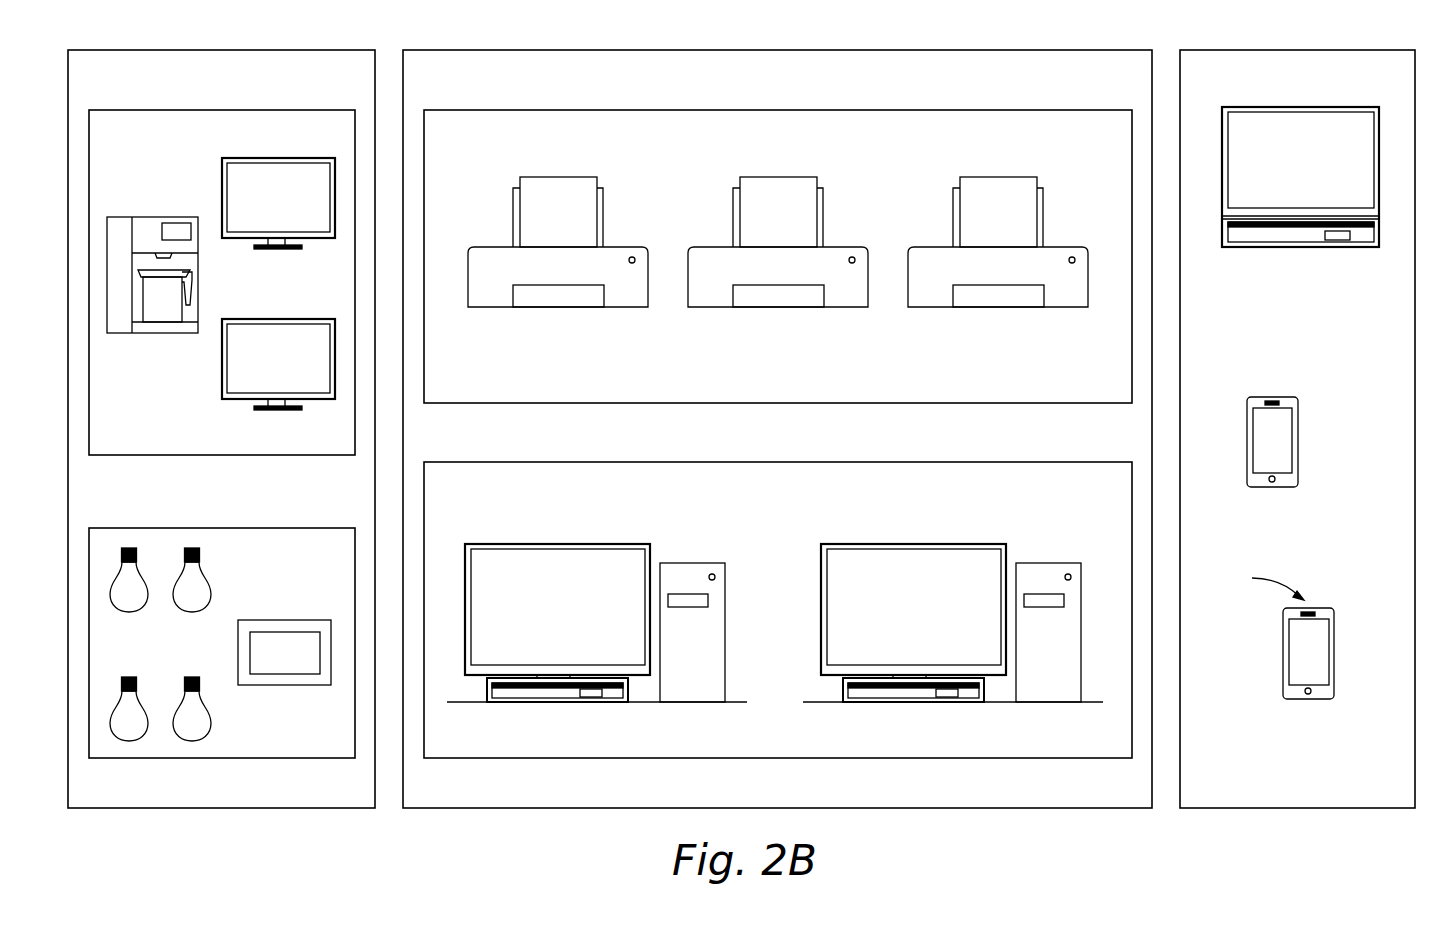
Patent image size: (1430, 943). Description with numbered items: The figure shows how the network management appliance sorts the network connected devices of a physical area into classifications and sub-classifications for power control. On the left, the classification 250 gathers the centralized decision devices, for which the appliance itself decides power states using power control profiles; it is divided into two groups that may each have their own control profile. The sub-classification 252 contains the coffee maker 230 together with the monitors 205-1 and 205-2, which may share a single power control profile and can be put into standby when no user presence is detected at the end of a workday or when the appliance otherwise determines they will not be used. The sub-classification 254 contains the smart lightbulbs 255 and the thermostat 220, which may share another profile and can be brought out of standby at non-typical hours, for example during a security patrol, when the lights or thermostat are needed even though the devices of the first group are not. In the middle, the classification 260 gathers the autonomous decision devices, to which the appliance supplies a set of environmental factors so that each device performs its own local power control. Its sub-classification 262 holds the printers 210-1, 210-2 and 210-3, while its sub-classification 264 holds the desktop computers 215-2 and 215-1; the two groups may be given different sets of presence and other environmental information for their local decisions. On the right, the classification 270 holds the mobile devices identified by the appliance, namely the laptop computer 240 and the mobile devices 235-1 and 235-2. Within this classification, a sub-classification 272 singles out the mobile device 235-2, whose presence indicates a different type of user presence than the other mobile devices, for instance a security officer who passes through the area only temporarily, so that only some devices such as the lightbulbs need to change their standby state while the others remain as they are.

The classification 250 is at (298, 50).
The sub-classification 252 is at (275, 110).
The sub-classification 254 is at (277, 527).
The monitor 205-1 is at (250, 158).
The monitor 205-2 is at (240, 319).
The coffee maker 230 is at (149, 215).
The light bulbs 255 is at (188, 606).
The thermostat 220 is at (278, 620).
The classification 260 is at (1070, 50).
The sub-classification 262 is at (1052, 110).
The sub-classification 264 is at (1052, 462).
The printer 210-1 is at (559, 307).
The printer 210-2 is at (779, 307).
The printer 210-3 is at (999, 307).
The desktop computer 215-2 is at (578, 530).
The desktop computer 215-1 is at (983, 530).
The classification 270 is at (1335, 50).
The laptop computer 240 is at (1292, 247).
The mobile device 235-1 is at (1264, 487).
The mobile device 235-2 is at (1300, 699).
The sub-classification 272 is at (1247, 584).